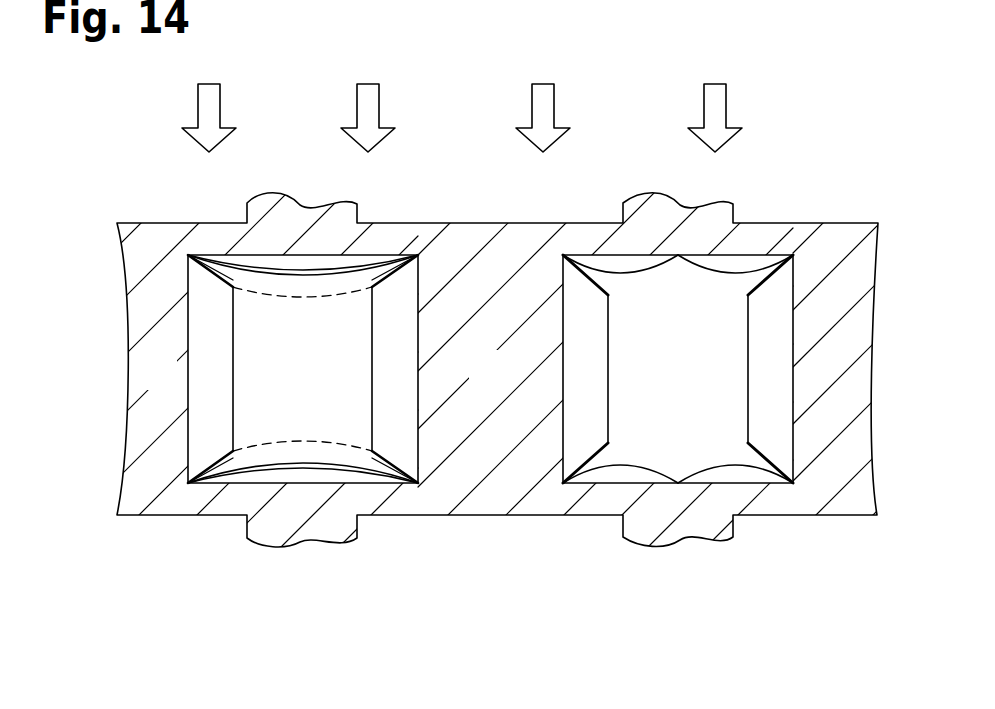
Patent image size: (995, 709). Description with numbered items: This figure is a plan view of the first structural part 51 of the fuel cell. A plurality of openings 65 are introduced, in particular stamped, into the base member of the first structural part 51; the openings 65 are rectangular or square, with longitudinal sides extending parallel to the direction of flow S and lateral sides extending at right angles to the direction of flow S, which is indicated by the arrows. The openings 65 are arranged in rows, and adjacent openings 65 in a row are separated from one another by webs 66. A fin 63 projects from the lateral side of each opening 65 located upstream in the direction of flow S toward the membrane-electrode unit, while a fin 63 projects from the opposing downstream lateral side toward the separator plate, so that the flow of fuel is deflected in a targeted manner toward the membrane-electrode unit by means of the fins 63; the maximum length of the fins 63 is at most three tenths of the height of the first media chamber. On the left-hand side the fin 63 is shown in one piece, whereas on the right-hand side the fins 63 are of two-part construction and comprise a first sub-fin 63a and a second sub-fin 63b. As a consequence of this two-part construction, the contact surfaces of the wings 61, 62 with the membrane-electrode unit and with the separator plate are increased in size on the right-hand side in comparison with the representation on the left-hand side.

The first structural part 51 is at (455, 218).
The wing 61 is at (194, 385).
The wing 62 is at (378, 385).
The fin 63 is at (308, 264).
The first sub-fin 63a is at (600, 270).
The second sub-fin 63b is at (752, 268).
The opening 65 is at (283, 385).
The web 66 is at (140, 385).
The direction of flow S is at (198, 100).